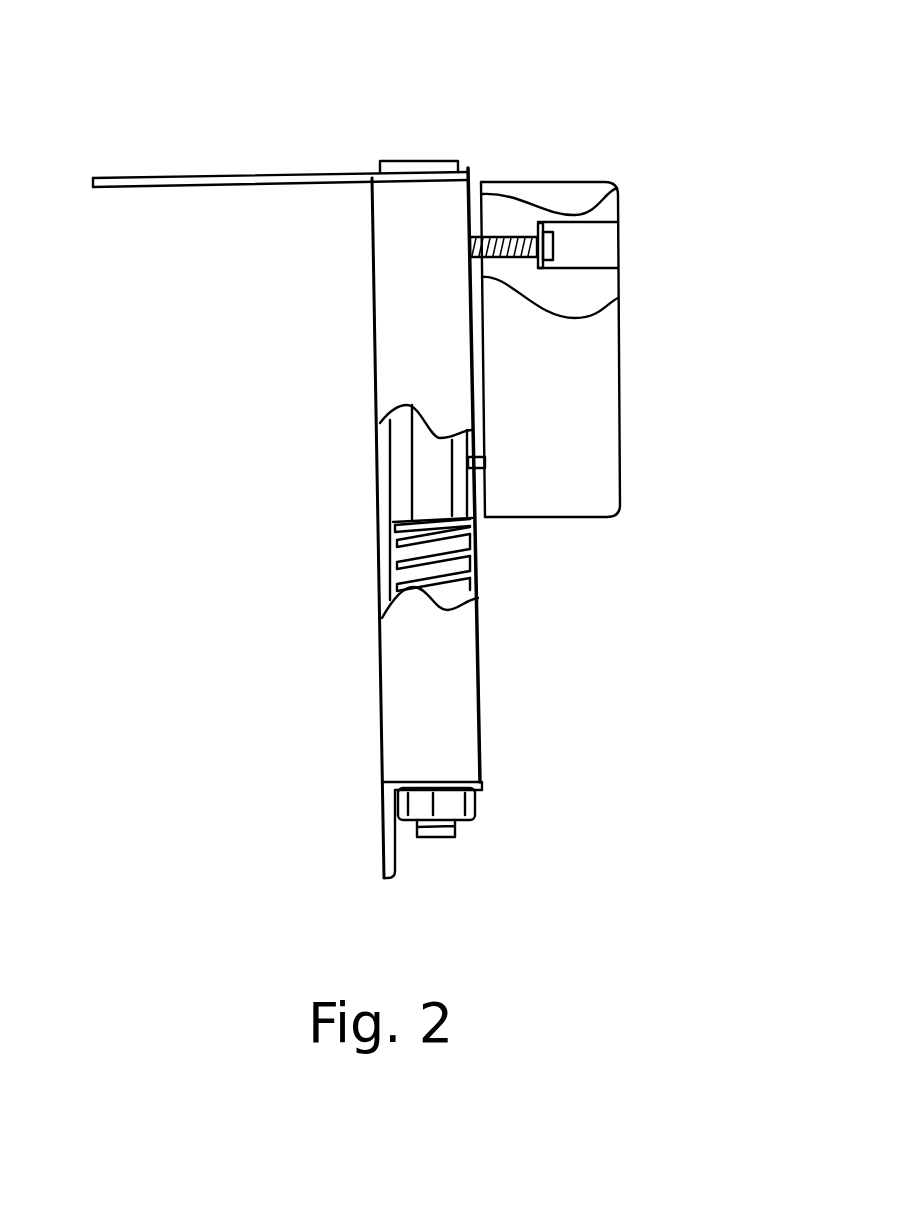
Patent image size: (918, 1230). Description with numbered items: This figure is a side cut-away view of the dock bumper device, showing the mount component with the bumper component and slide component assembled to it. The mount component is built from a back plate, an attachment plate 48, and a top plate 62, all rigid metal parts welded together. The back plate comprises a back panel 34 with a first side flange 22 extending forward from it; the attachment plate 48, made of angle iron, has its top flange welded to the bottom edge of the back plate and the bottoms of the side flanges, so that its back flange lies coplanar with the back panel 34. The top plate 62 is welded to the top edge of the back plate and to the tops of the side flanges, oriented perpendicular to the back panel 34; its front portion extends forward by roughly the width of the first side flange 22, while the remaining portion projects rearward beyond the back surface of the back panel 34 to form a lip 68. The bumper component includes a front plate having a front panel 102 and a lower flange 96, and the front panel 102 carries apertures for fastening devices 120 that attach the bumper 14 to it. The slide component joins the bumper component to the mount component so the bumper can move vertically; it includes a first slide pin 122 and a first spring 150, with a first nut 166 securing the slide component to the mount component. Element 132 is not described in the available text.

The bumper 14 is at (603, 463).
The first side flange 22 is at (435, 700).
The back panel 34 is at (385, 572).
The attachment plate 48 is at (390, 790).
The top plate 62 is at (372, 175).
The lip 68 is at (212, 183).
The lower flange 96 is at (468, 522).
The front panel 102 is at (480, 378).
The fastening devices 120 is at (553, 245).
The first slide pin 122 is at (433, 473).
The tab 132 is at (427, 162).
The first spring 150 is at (487, 577).
The first nut 166 is at (455, 803).